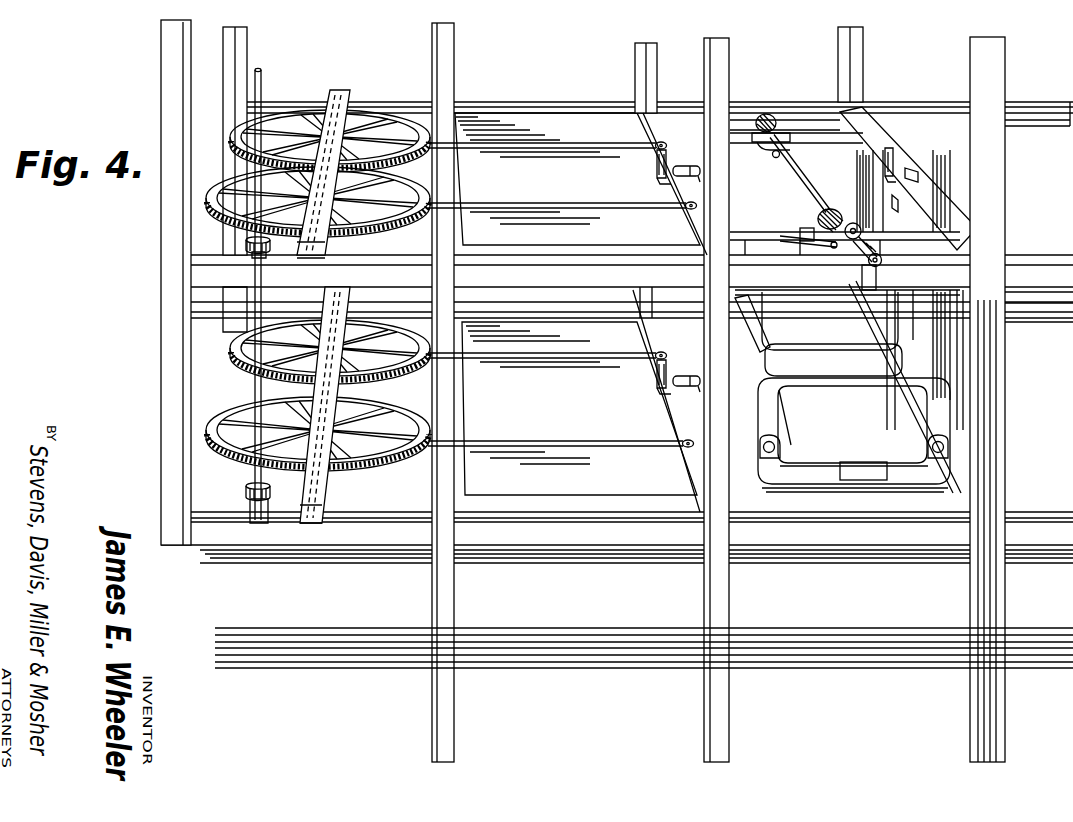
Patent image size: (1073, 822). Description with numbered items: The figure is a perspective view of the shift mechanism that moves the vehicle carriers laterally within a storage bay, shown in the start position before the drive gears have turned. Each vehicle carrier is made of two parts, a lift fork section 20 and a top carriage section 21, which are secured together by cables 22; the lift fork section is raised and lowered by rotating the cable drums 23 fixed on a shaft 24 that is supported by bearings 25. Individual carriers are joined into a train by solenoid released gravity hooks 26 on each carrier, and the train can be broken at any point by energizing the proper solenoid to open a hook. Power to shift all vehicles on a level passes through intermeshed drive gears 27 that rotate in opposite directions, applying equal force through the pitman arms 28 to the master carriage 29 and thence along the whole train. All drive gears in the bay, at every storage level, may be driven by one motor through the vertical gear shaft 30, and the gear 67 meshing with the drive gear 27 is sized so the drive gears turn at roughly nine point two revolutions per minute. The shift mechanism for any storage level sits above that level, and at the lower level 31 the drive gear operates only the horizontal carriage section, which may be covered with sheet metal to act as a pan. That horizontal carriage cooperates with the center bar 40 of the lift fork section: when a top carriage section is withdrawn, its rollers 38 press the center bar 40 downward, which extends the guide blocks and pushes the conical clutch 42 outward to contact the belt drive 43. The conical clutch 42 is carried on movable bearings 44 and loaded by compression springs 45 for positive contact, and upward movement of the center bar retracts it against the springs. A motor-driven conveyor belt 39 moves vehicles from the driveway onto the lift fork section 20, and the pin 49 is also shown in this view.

The lift fork section 20 is at (955, 370).
The top carriage section 21 is at (790, 262).
The cables 22 is at (775, 158).
The cable drums 23 is at (768, 114).
The shaft 24 is at (800, 178).
The bearings 25 is at (768, 145).
The solenoid released gravity hooks 26 is at (676, 178).
The drive gears 27 is at (235, 185).
The pitman arms 28 is at (520, 148).
The master carriage 29 is at (688, 215).
The vertical gear shaft 30 is at (266, 86).
The lower level 31 is at (1066, 439).
The rollers 38 is at (656, 160).
The conveyor belt 39 is at (815, 668).
The center bar 40 is at (892, 304).
The conical clutch 42 is at (851, 240).
The belt drive 43 is at (882, 262).
The movable bearings 44 is at (784, 235).
The compression springs 45 is at (803, 228).
The pin 49 is at (832, 249).
The gear 67 is at (270, 255).